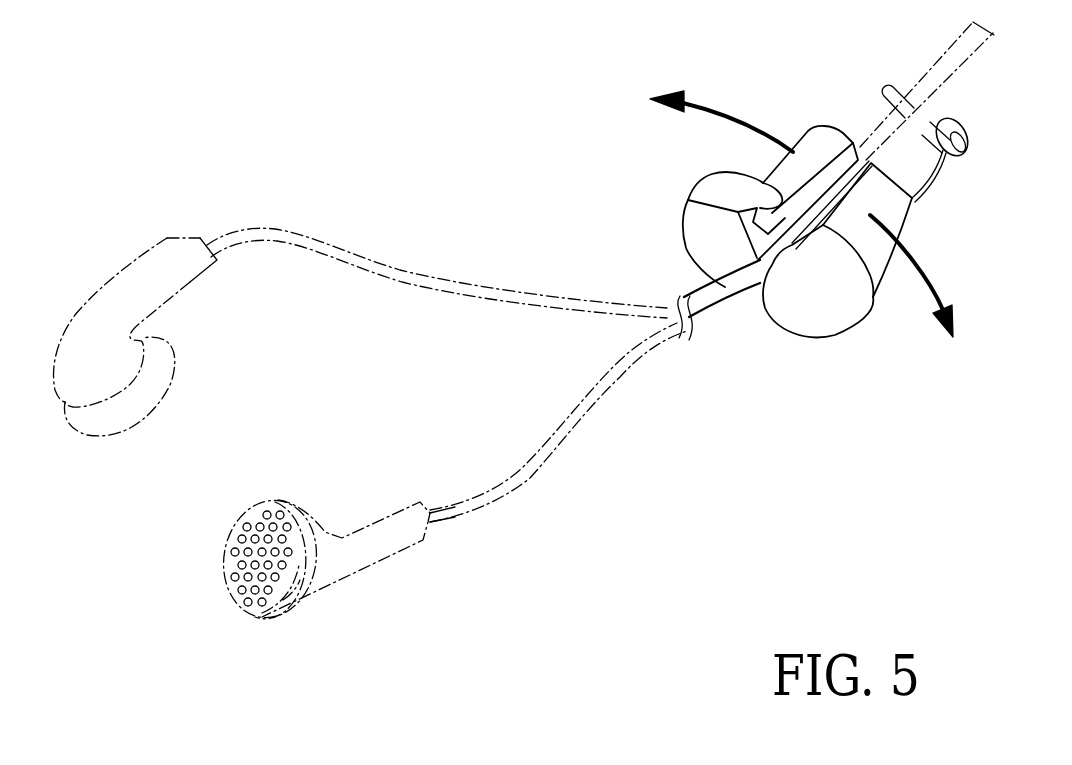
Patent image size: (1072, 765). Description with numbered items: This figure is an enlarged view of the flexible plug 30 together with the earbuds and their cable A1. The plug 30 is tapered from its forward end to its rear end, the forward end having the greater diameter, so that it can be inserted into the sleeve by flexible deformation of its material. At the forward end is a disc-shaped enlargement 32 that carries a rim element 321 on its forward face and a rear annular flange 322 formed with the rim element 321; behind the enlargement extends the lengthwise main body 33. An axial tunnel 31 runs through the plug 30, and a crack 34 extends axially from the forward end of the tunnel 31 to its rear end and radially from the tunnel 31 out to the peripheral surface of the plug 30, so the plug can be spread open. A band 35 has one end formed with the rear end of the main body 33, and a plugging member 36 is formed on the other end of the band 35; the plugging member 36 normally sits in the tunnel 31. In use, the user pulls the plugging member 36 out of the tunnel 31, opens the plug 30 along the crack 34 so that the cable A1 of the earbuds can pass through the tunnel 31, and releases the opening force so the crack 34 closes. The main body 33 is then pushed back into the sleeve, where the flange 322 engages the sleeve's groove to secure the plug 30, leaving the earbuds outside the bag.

The plug 30 is at (640, 227).
The tunnel 31 is at (762, 298).
The disc-shaped enlargement 32 is at (803, 310).
The rim element 321 is at (855, 298).
The rear annular flange 322 is at (781, 200).
The main body 33 is at (827, 128).
The crack 34 is at (858, 158).
The band 35 is at (935, 186).
The plugging member 36 is at (962, 125).
The cable A1 is at (713, 302).